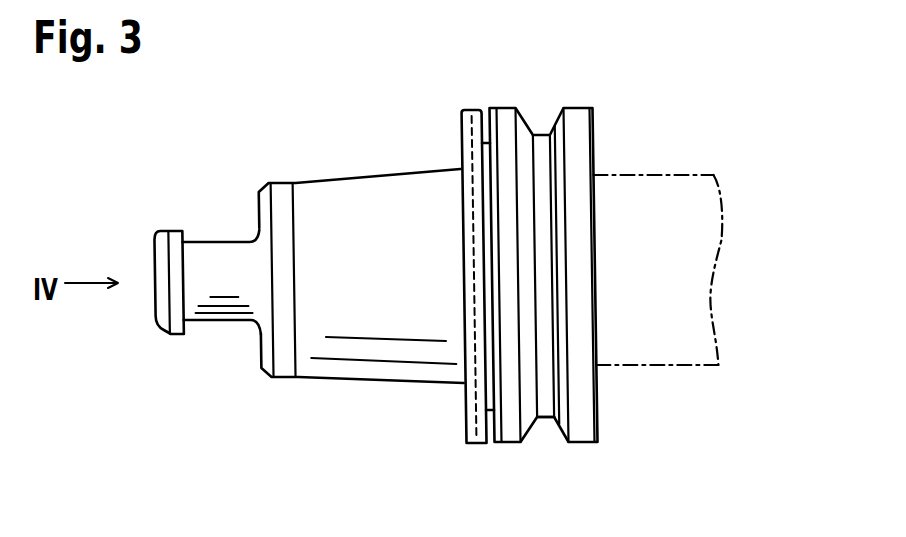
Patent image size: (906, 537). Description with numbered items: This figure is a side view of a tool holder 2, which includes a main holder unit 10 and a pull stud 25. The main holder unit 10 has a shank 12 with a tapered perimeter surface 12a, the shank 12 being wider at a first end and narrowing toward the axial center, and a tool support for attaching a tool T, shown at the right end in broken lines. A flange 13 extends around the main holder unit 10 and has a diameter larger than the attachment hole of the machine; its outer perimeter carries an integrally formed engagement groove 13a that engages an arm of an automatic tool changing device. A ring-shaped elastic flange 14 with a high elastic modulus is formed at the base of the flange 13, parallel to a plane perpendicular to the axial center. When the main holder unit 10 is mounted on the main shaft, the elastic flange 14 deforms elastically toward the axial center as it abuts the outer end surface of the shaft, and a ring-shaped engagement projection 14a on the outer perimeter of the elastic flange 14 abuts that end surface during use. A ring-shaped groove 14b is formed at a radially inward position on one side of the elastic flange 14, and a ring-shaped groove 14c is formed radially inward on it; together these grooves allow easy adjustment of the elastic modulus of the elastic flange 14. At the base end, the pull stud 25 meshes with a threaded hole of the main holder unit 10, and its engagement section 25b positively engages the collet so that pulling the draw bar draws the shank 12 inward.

The tool holder 2 is at (660, 64).
The main holder unit 10 is at (610, 128).
The shank 12 is at (377, 382).
The tapered perimeter surface 12a is at (380, 176).
The flange 13 is at (585, 443).
The engagement groove 13a is at (547, 418).
The ring-shaped elastic flange 14 is at (478, 110).
The ring-shaped engagement projection 14a is at (458, 112).
The ring-shaped groove 14b is at (460, 142).
The ring-shaped groove 14c is at (503, 112).
The pull stud 25 is at (222, 327).
The engagement section 25b is at (163, 328).
The tool T is at (718, 258).